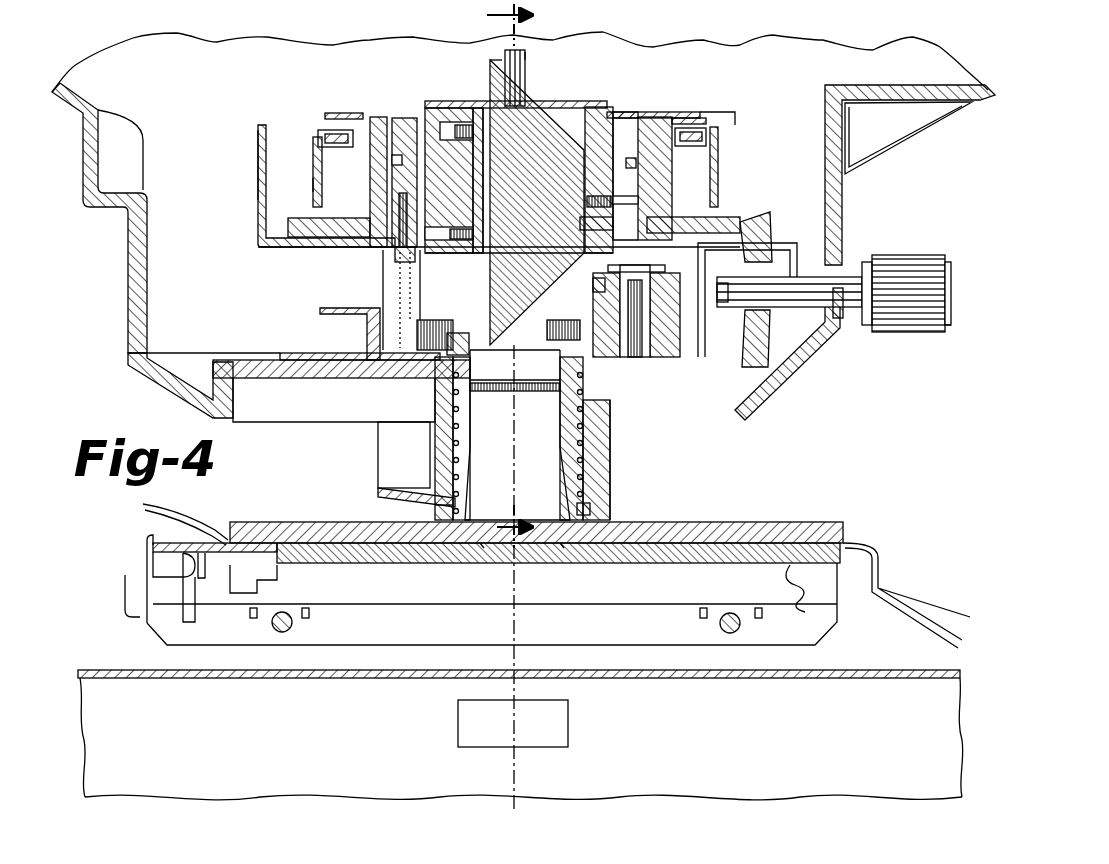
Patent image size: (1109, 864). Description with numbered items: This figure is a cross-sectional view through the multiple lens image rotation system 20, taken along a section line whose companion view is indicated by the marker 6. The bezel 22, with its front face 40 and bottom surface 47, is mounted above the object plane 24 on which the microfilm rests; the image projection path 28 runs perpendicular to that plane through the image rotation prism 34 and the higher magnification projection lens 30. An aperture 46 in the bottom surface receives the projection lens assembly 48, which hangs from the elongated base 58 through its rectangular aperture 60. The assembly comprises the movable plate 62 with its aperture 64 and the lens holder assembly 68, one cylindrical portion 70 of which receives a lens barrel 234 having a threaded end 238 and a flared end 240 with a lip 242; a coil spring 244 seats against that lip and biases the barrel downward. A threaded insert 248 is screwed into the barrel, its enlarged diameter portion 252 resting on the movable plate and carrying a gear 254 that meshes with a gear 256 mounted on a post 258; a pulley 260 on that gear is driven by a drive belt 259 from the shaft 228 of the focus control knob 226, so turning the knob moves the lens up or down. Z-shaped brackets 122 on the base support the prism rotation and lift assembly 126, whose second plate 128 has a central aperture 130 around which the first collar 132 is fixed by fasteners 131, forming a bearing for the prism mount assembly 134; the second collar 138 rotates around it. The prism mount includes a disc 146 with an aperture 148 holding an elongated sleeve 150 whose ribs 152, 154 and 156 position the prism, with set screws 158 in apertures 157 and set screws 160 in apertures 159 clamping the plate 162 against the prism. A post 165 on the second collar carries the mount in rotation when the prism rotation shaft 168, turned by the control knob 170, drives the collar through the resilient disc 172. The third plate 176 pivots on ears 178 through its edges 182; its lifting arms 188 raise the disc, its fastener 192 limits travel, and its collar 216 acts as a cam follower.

The multiple lens image rotation system 20 is at (905, 45).
The bezel 22 is at (128, 322).
The object plane 24 is at (945, 552).
The image projection path 28 is at (530, 95).
The projection lens 30 is at (530, 392).
The image rotation prism 34 is at (498, 58).
The front face 40 is at (842, 200).
The aperture 46 is at (355, 378).
The bottom surface 47 is at (292, 380).
The projection lens assembly 48 is at (378, 464).
The elongated base 58 is at (318, 310).
The rectangular aperture 60 is at (440, 366).
The movable plate 62 is at (405, 322).
The aperture 64 is at (460, 333).
The lens holder assembly 68 is at (612, 467).
The cylindrical portion 70 is at (600, 402).
The Z-shaped bracket 122 is at (368, 312).
The prism rotation and lift assembly 126 is at (722, 66).
The second plate 128 is at (256, 222).
The aperture 130 is at (410, 256).
The fasteners 131 is at (399, 248).
The first collar 132 is at (392, 118).
The prism mount assembly 134 is at (660, 117).
The second collar 138 is at (760, 215).
The disc 146 is at (710, 112).
The aperture 148 is at (612, 113).
The elongated sleeve 150 is at (370, 186).
The ribs 152 is at (540, 110).
The rib 154 is at (600, 110).
The rib 156 is at (447, 108).
The threaded radial apertures 157 is at (640, 163).
The set screws 158 is at (612, 200).
The radial apertures 159 is at (452, 101).
The set screws 160 is at (450, 128).
The plate 162 is at (465, 122).
The post 165 is at (528, 55).
The prism rotation shaft 168 is at (862, 280).
The control knob 170 is at (920, 256).
The resilient disc 172 is at (792, 388).
The third plate 176 is at (310, 186).
The ears 178 is at (258, 152).
The edges 182 is at (313, 165).
The lifting arms 188 is at (320, 136).
The fastener 192 is at (520, 766).
The collar 216 is at (330, 113).
The focus control knob 226 is at (948, 334).
The shaft 228 is at (845, 312).
The lens barrel 234 is at (485, 548).
The threaded end 238 is at (588, 396).
The flared end 240 is at (562, 548).
The lip 242 is at (590, 508).
The coil spring 244 is at (450, 505).
The threaded insert 248 is at (452, 402).
The enlarged diameter portion 252 is at (440, 320).
The gear 254 is at (380, 355).
The gear 256 is at (700, 352).
The post 258 is at (640, 201).
The drive belt 259 is at (593, 286).
The pulley 260 is at (578, 308).
The section line 6 is at (521, 276).